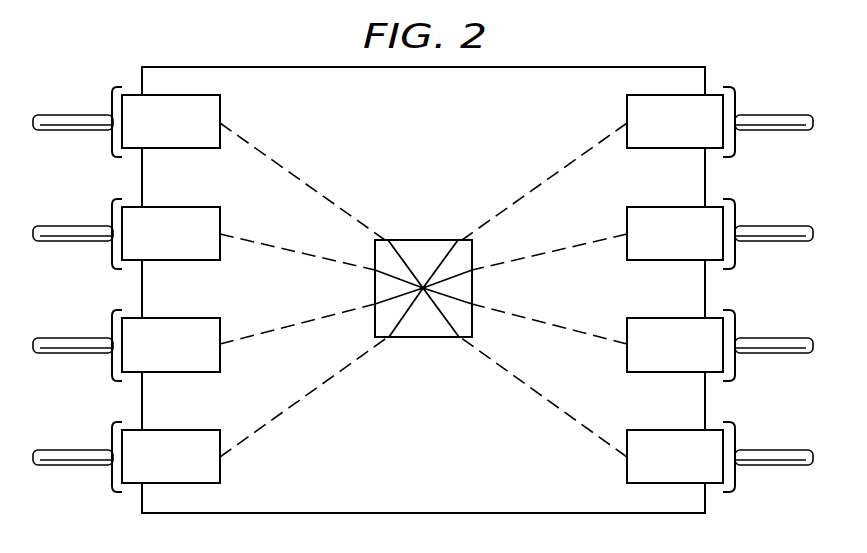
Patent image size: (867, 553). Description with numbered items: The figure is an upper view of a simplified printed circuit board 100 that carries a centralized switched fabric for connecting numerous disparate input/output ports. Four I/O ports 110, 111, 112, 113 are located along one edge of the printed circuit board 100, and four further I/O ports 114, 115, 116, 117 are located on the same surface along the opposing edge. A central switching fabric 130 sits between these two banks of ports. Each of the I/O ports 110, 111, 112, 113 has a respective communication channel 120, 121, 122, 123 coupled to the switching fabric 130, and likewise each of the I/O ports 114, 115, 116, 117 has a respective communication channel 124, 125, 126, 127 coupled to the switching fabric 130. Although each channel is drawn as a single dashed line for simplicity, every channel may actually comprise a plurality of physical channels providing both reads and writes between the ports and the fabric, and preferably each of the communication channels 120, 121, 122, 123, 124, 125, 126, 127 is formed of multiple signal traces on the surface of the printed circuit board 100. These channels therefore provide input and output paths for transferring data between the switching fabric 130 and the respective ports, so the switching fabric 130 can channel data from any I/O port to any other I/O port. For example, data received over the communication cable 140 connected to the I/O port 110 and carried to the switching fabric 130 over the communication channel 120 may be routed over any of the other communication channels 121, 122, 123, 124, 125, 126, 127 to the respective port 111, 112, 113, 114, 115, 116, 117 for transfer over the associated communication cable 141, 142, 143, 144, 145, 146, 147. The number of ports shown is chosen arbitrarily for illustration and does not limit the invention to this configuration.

The printed circuit board 100 is at (442, 488).
The I/O port 110 is at (133, 98).
The I/O port 111 is at (182, 212).
The I/O port 112 is at (182, 373).
The I/O port 113 is at (135, 480).
The I/O port 114 is at (713, 97).
The I/O port 115 is at (665, 212).
The I/O port 116 is at (665, 373).
The I/O port 117 is at (713, 478).
The communication channel 120 is at (281, 162).
The communication channel 121 is at (278, 247).
The communication channel 122 is at (280, 332).
The communication channel 123 is at (283, 417).
The communication channel 124 is at (563, 165).
The communication channel 125 is at (567, 247).
The communication channel 126 is at (563, 332).
The communication channel 127 is at (567, 414).
The switching fabric 130 is at (417, 239).
The communication cable 140 is at (72, 119).
The communication cable 141 is at (72, 230).
The communication cable 142 is at (73, 353).
The communication cable 143 is at (75, 464).
The communication cable 144 is at (772, 118).
The communication cable 145 is at (772, 229).
The communication cable 146 is at (772, 354).
The communication cable 147 is at (772, 463).